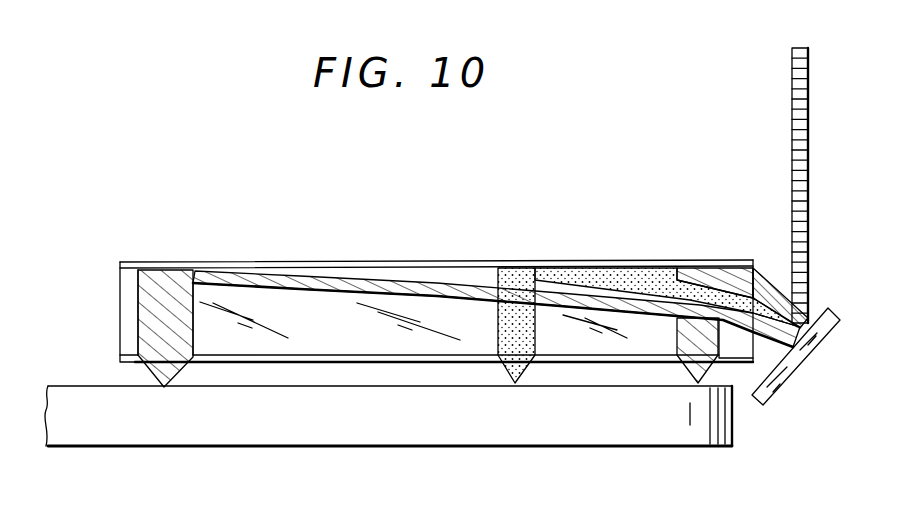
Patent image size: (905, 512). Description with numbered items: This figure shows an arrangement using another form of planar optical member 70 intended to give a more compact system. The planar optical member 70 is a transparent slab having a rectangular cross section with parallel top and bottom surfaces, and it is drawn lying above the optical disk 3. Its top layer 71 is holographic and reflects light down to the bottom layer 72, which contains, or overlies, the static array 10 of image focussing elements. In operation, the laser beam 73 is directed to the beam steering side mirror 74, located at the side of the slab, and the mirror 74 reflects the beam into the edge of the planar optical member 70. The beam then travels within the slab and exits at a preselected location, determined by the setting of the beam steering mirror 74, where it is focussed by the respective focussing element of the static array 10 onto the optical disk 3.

The optical disk 3 is at (222, 433).
The static array 10 is at (128, 368).
The planar optical member 70 is at (217, 300).
The top layer 71 is at (294, 262).
The bottom layer 72 is at (384, 352).
The laser beam 73 is at (790, 68).
The beam steering side mirror 74 is at (772, 403).